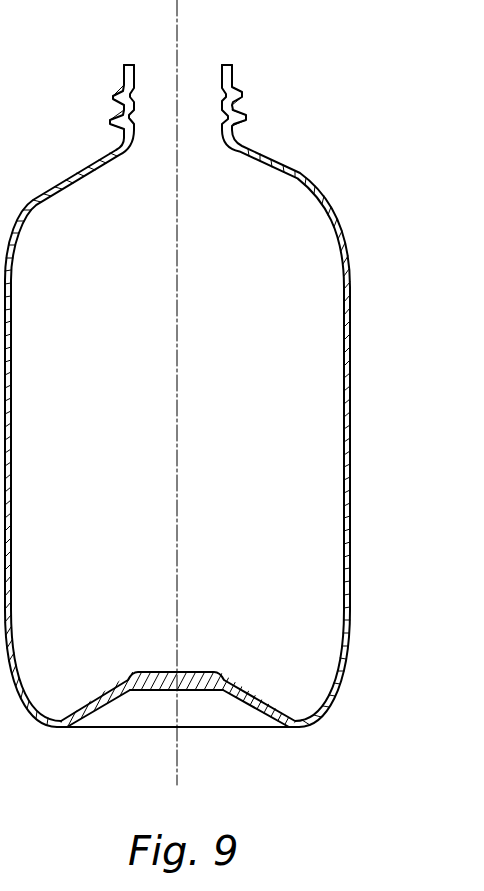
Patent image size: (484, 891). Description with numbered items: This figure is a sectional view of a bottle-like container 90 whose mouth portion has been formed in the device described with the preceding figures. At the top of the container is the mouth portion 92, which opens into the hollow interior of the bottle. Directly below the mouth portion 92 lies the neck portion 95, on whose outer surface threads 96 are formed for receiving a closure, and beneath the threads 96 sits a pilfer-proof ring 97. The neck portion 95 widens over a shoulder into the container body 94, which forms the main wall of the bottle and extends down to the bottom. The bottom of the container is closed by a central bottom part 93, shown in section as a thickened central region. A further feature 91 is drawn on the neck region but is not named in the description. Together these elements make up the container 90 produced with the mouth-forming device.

The bottle-like container 90 is at (221, 392).
The upper thread (left) 91 is at (122, 104).
The mouth portion 92 is at (193, 80).
The central bottom part 93 is at (200, 690).
The container body 94 is at (350, 354).
The neck portion 95 is at (205, 139).
The threads 96 is at (238, 86).
The pilfer-proof ring 97 is at (122, 121).